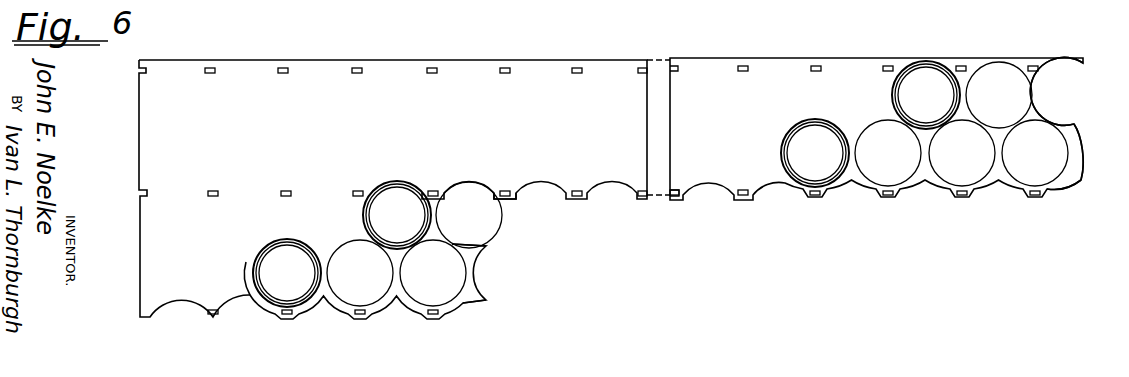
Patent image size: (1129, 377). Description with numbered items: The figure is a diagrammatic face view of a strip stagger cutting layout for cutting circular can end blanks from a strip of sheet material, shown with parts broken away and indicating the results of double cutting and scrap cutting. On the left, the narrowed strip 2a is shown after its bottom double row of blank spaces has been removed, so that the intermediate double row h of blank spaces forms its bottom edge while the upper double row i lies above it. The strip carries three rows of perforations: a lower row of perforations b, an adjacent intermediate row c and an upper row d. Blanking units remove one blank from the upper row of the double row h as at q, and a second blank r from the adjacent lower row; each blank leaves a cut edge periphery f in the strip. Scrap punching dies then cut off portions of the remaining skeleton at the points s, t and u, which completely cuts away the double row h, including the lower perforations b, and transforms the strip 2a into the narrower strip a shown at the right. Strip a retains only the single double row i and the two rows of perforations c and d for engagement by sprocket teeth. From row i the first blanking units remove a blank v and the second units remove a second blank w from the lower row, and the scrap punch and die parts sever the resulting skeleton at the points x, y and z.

The narrowed strip 2a is at (248, 75).
The strip a is at (855, 77).
The lower row of perforations b is at (279, 318).
The intermediate row of perforations c is at (283, 190).
The upper row of perforations d is at (428, 78).
The cut edge periphery f is at (328, 262).
The intermediate double row of blank spaces h is at (201, 246).
The upper double row of blank spaces i is at (624, 122).
The blank q is at (397, 215).
The second blank r is at (287, 273).
The scrap severing point s is at (507, 199).
The scrap severing point t is at (487, 246).
The scrap severing point u is at (487, 300).
The blank v is at (926, 95).
The second blank w is at (815, 153).
The scrap severing point x is at (1083, 58).
The scrap severing point y is at (1076, 125).
The scrap severing point z is at (1082, 178).